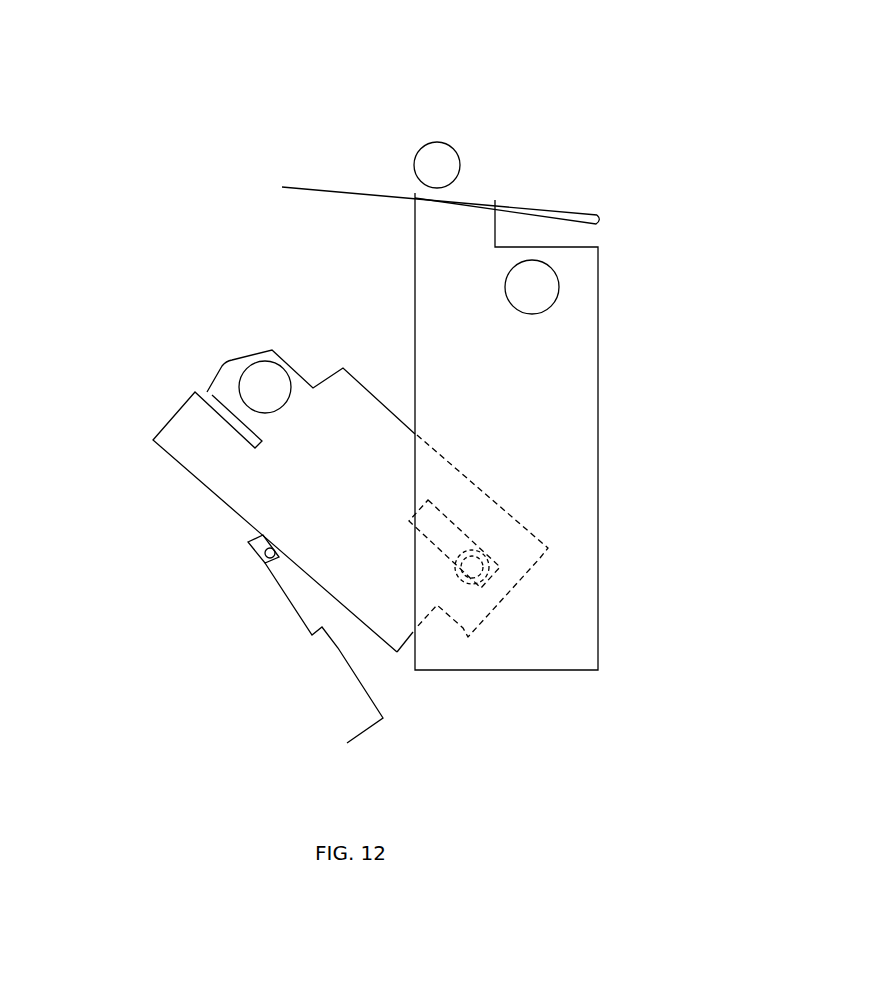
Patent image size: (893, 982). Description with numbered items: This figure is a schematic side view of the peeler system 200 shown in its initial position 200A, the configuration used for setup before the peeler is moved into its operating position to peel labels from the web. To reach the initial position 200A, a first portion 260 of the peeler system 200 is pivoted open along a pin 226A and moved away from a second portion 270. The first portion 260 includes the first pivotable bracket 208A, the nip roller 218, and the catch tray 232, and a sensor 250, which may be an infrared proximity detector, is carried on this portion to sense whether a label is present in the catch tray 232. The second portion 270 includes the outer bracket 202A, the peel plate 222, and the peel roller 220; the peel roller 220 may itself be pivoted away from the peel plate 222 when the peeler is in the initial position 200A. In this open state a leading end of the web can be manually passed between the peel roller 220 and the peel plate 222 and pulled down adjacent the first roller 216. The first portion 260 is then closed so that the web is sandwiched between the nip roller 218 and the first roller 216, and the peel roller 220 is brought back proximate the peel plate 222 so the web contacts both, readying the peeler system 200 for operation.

The peeler system 200 is at (582, 128).
The initial position 200A is at (175, 215).
The outer bracket 202A is at (543, 443).
The peel plate 222 is at (415, 194).
The peel roller 220 is at (430, 145).
The first roller 216 is at (550, 302).
The second portion 270 is at (395, 297).
The first pivotable bracket 208A is at (237, 512).
The nip roller 218 is at (253, 392).
The first portion 260 is at (258, 335).
The sensor 250 is at (267, 560).
The catch tray 232 is at (338, 653).
The pin 226A is at (479, 578).